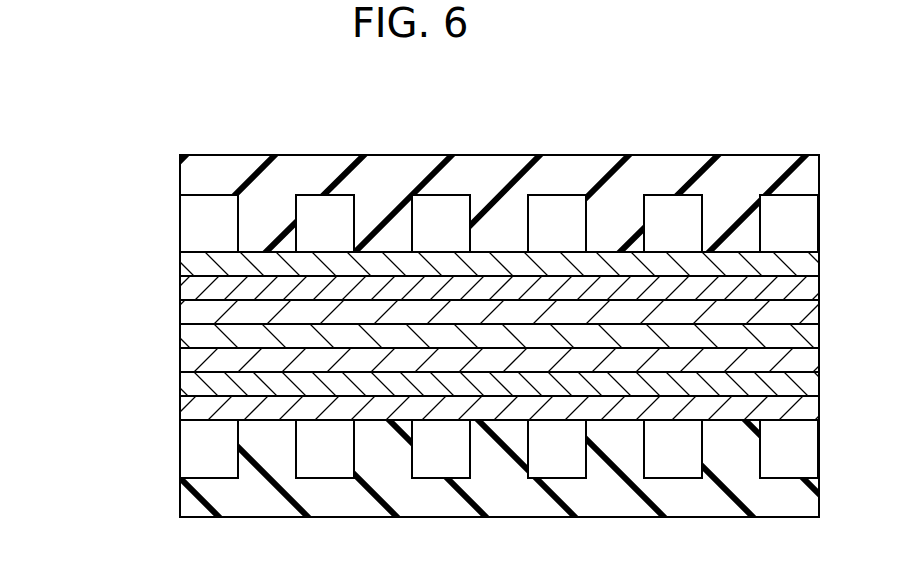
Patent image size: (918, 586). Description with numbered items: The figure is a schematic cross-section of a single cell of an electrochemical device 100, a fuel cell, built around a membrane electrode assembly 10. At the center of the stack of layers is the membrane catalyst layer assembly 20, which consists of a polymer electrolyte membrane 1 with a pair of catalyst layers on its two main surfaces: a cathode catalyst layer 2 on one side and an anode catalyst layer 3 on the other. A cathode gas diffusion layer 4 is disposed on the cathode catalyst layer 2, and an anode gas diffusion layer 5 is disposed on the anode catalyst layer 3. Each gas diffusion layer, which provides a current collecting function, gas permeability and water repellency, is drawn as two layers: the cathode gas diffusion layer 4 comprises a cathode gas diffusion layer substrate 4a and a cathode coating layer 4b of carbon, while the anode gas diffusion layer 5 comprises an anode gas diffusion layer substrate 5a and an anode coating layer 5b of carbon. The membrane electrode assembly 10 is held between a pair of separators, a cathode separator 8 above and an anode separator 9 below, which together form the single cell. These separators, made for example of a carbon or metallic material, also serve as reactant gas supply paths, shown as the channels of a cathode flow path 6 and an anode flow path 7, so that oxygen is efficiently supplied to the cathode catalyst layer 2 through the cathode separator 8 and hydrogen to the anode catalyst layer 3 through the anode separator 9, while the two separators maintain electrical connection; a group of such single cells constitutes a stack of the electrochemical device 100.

The electrochemical device 100 is at (641, 122).
The cathode separator 8 is at (200, 173).
The cathode flow path 6 is at (200, 212).
The membrane electrode assembly 10 is at (67, 223).
The cathode gas diffusion layer 4 is at (100, 225).
The cathode gas diffusion layer substrate 4a is at (202, 265).
The cathode coating layer 4b is at (200, 287).
The membrane catalyst layer assembly 20 is at (108, 300).
The cathode catalyst layer 2 is at (205, 310).
The polymer electrolyte membrane 1 is at (205, 337).
The anode catalyst layer 3 is at (193, 362).
The anode gas diffusion layer 5 is at (100, 395).
The anode coating layer 5b is at (193, 385).
The anode gas diffusion layer substrate 5a is at (193, 403).
The anode flow path 7 is at (202, 455).
The anode separator 9 is at (195, 502).